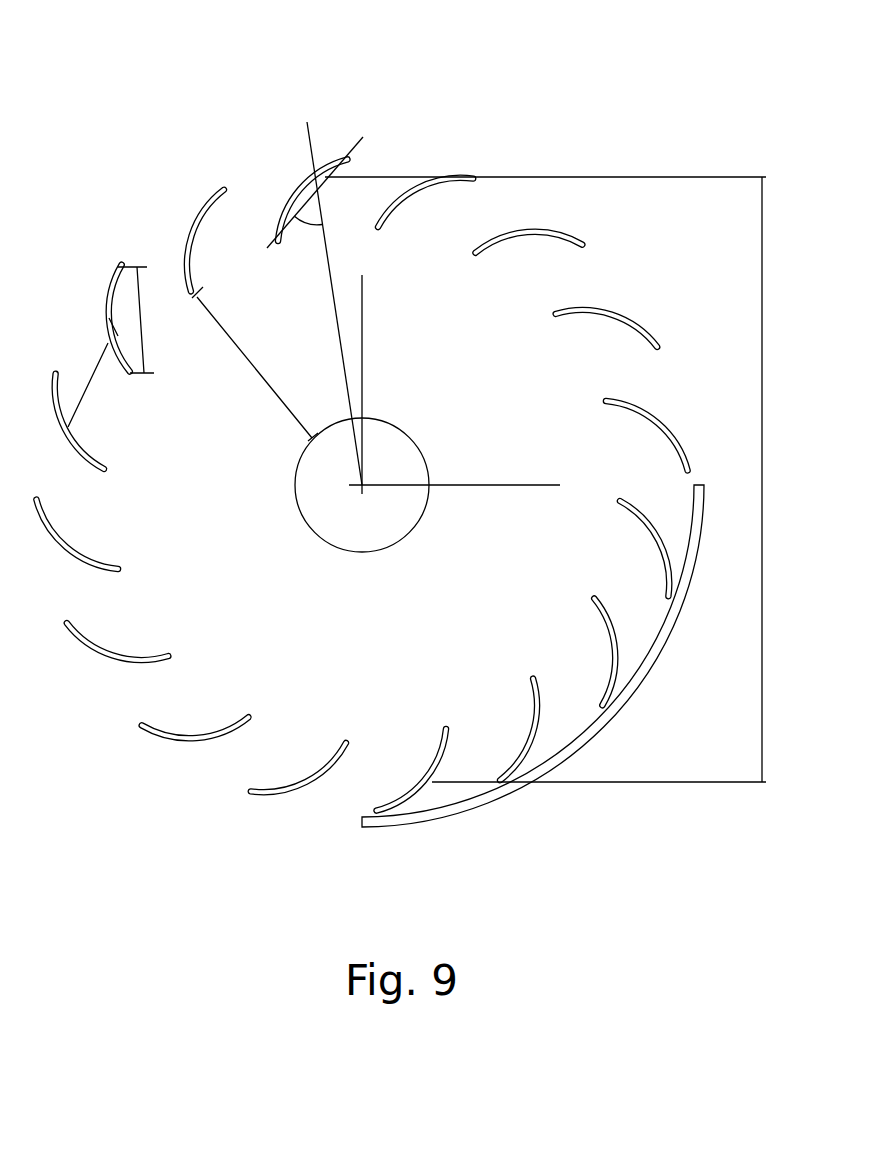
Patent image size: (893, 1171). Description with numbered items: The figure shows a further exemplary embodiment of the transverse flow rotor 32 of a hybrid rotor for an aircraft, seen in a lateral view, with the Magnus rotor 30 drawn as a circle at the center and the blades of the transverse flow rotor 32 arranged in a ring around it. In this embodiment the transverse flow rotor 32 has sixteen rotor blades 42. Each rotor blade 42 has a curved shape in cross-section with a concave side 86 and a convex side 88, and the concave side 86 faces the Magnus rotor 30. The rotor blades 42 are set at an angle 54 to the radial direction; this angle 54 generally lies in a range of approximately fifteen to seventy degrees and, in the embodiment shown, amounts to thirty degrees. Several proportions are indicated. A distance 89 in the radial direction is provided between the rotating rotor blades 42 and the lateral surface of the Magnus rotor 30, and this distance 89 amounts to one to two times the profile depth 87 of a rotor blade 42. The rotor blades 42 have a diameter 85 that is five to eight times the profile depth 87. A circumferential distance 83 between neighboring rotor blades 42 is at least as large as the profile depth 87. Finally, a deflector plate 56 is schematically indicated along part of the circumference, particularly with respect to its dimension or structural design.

The Magnus rotor 30 is at (396, 420).
The transverse flow rotor 32 is at (392, 94).
The rotor blade 42 is at (312, 168).
The angle 54 is at (296, 228).
The deflector plate 56 is at (428, 812).
The circumferential distance 83 is at (86, 395).
The diameter 85 is at (562, 479).
The concave side 86 is at (186, 254).
The profile depth 87 is at (149, 318).
The convex side 88 is at (212, 219).
The distance 89 is at (255, 364).